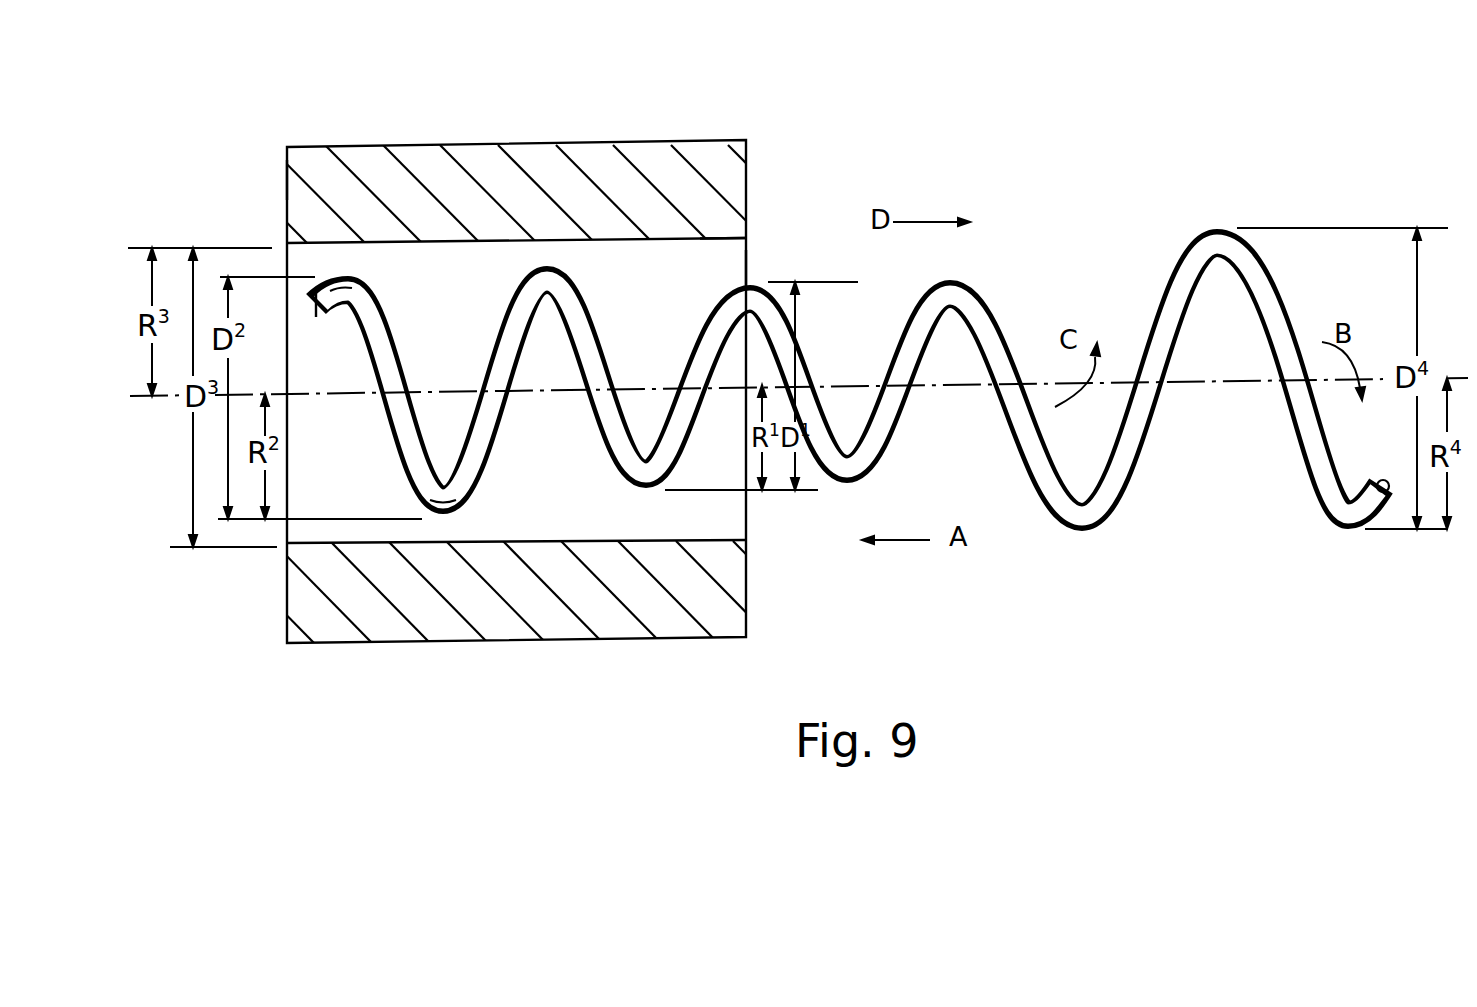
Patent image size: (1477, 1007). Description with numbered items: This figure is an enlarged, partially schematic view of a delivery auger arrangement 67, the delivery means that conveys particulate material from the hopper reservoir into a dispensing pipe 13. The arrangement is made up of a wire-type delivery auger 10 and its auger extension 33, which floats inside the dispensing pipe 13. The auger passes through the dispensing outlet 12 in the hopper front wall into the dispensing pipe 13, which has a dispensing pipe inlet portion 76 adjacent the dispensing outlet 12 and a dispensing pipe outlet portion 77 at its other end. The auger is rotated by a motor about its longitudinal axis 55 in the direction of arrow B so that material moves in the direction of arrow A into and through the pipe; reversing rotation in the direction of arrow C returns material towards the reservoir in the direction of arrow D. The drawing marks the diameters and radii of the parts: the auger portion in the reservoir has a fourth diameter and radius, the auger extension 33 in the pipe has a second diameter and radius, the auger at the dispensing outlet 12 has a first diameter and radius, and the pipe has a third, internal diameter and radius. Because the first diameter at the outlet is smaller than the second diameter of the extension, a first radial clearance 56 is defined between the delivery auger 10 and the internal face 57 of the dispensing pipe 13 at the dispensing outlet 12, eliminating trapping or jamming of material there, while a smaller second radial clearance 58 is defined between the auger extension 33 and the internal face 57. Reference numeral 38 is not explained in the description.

The delivery auger 10 is at (1090, 512).
The dispensing outlet 12 is at (748, 250).
The dispensing pipe 13 is at (723, 173).
The auger extension 33 is at (452, 504).
The end coil 38 is at (345, 290).
The longitudinal axis 55 is at (1183, 383).
The radial clearance 56 is at (748, 267).
The internal face 57 is at (632, 538).
The second radial clearance 58 is at (332, 262).
The delivery auger arrangement 67 is at (897, 153).
The dispensing pipe inlet portion 76 is at (732, 140).
The dispensing pipe outlet portion 77 is at (287, 172).